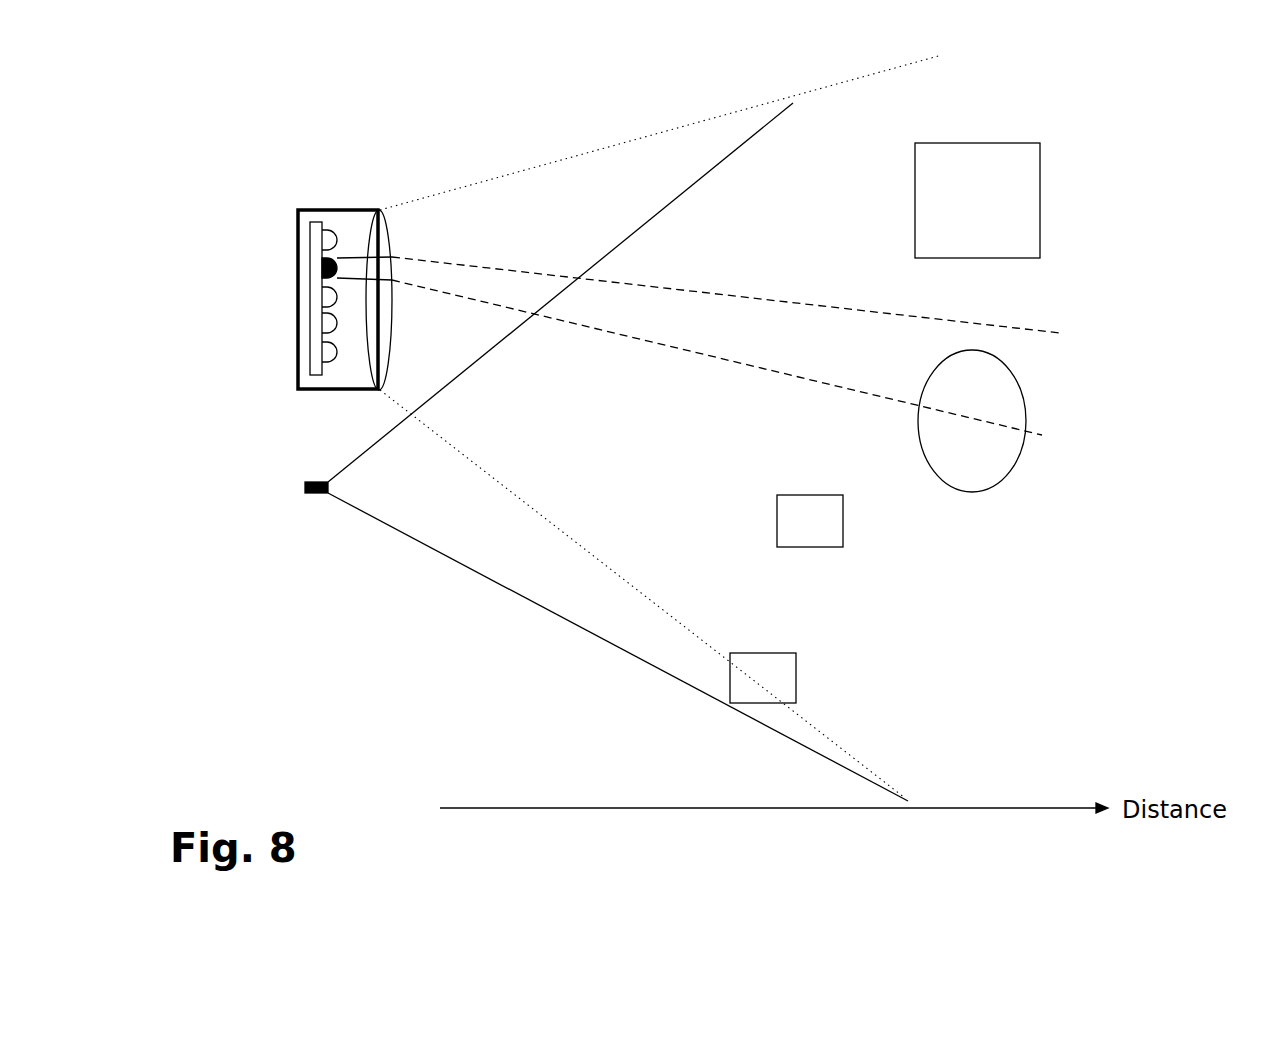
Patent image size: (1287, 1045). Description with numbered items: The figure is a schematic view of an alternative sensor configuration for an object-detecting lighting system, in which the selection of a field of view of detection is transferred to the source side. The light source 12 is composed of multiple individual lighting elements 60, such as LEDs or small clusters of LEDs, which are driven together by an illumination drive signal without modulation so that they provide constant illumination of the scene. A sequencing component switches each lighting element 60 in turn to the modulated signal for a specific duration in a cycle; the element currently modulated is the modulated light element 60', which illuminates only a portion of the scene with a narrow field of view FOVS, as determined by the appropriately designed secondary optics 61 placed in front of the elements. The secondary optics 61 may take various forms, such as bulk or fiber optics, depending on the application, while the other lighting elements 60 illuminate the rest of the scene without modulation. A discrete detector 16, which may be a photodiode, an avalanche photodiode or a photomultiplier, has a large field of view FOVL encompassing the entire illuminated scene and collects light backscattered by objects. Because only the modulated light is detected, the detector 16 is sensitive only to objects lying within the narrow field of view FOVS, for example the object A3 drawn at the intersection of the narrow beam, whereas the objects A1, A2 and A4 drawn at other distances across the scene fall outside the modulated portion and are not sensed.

The visible-light source 12 is at (305, 296).
The lighting elements 60 is at (283, 296).
The modulated light element 60' is at (277, 258).
The secondary optics 61 is at (368, 390).
The detector 16 is at (305, 487).
The narrow field of view FOVS is at (738, 300).
The large field of view FOVL is at (556, 613).
The object A1 is at (730, 693).
The object A2 is at (843, 536).
The object A3 is at (1020, 447).
The object A4 is at (1040, 218).